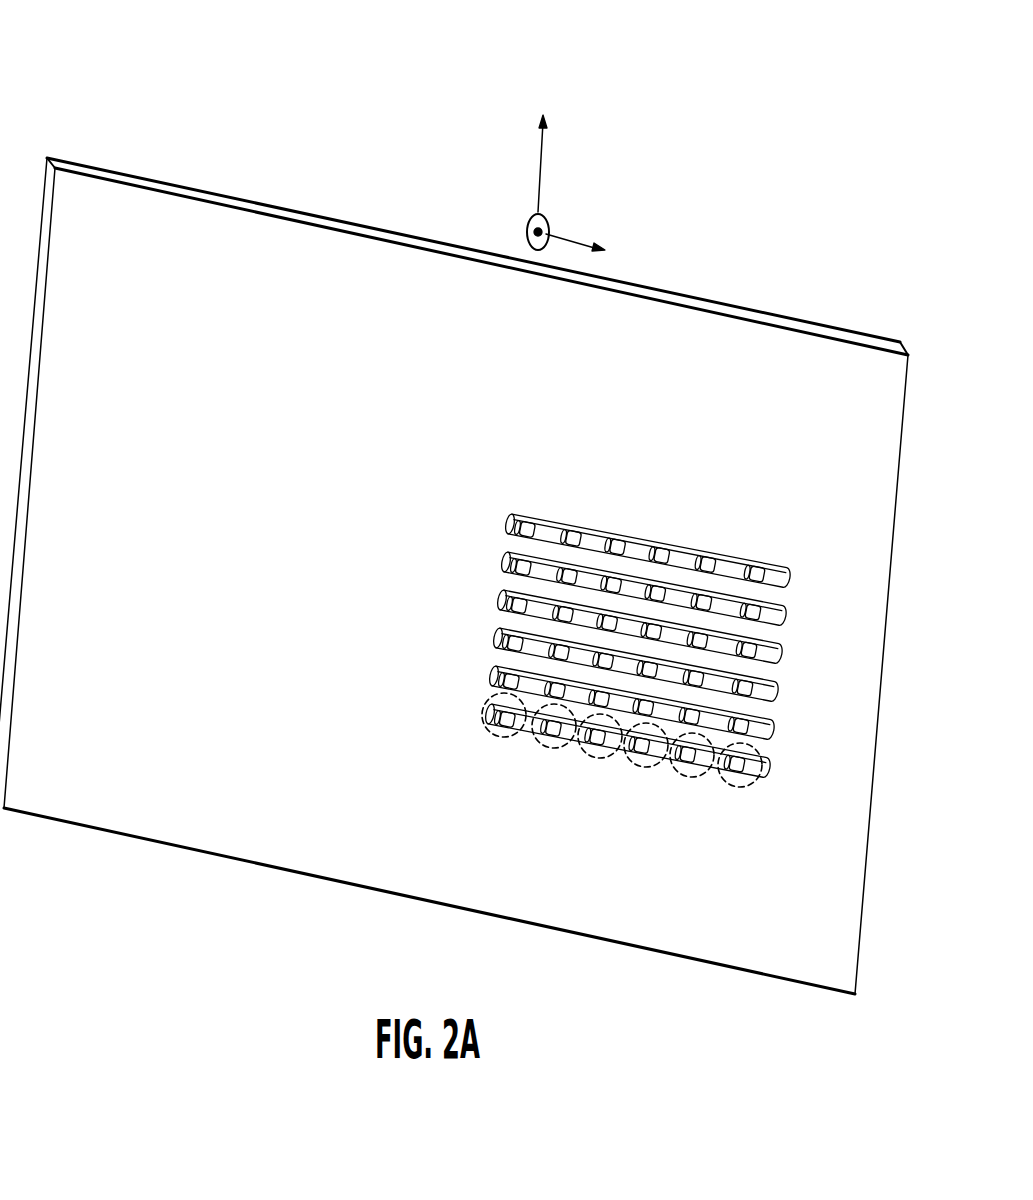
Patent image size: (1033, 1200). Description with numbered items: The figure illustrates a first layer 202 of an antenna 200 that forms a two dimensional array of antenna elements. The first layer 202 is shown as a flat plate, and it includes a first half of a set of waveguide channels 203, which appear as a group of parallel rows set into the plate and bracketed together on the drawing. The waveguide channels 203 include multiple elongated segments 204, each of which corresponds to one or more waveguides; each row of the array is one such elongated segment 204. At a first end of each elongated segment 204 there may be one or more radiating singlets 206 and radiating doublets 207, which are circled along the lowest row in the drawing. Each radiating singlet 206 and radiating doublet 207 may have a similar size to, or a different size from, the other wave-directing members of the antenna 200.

The antenna 200 is at (116, 112).
The first layer 202 is at (302, 222).
The waveguide channels 203 is at (797, 568).
The elongated segments 204 is at (788, 558).
The radiating singlets 206 is at (556, 748).
The radiating doublets 207 is at (598, 758).